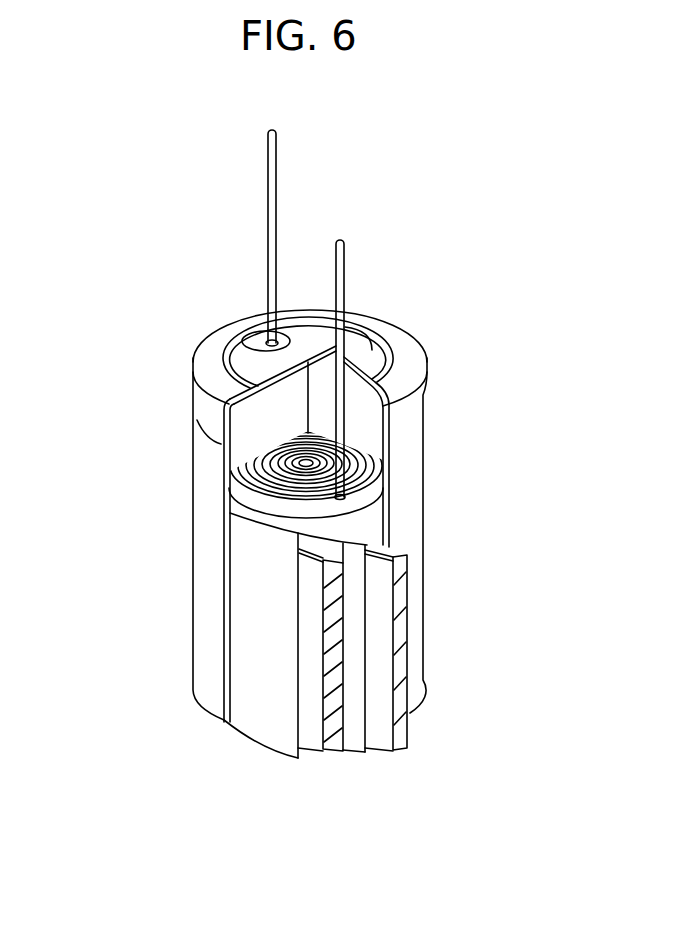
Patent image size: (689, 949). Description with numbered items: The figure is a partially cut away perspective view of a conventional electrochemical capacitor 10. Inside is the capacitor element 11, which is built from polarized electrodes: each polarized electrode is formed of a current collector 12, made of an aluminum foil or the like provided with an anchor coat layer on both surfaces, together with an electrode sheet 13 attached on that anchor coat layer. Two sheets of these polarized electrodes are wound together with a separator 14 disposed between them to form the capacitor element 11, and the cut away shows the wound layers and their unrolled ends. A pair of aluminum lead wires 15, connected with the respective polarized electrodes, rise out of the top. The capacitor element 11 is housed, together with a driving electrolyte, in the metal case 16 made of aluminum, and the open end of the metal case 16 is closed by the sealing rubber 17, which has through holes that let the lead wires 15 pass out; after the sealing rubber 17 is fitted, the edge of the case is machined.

The electrochemical capacitor 10 is at (395, 445).
The capacitor element 11 is at (263, 485).
The current collector 12 is at (333, 627).
The electrode sheet 13 is at (313, 709).
The separator 14 is at (267, 732).
The lead wires 15 is at (272, 225).
The metal case 16 is at (417, 450).
The sealing rubber 17 is at (380, 453).